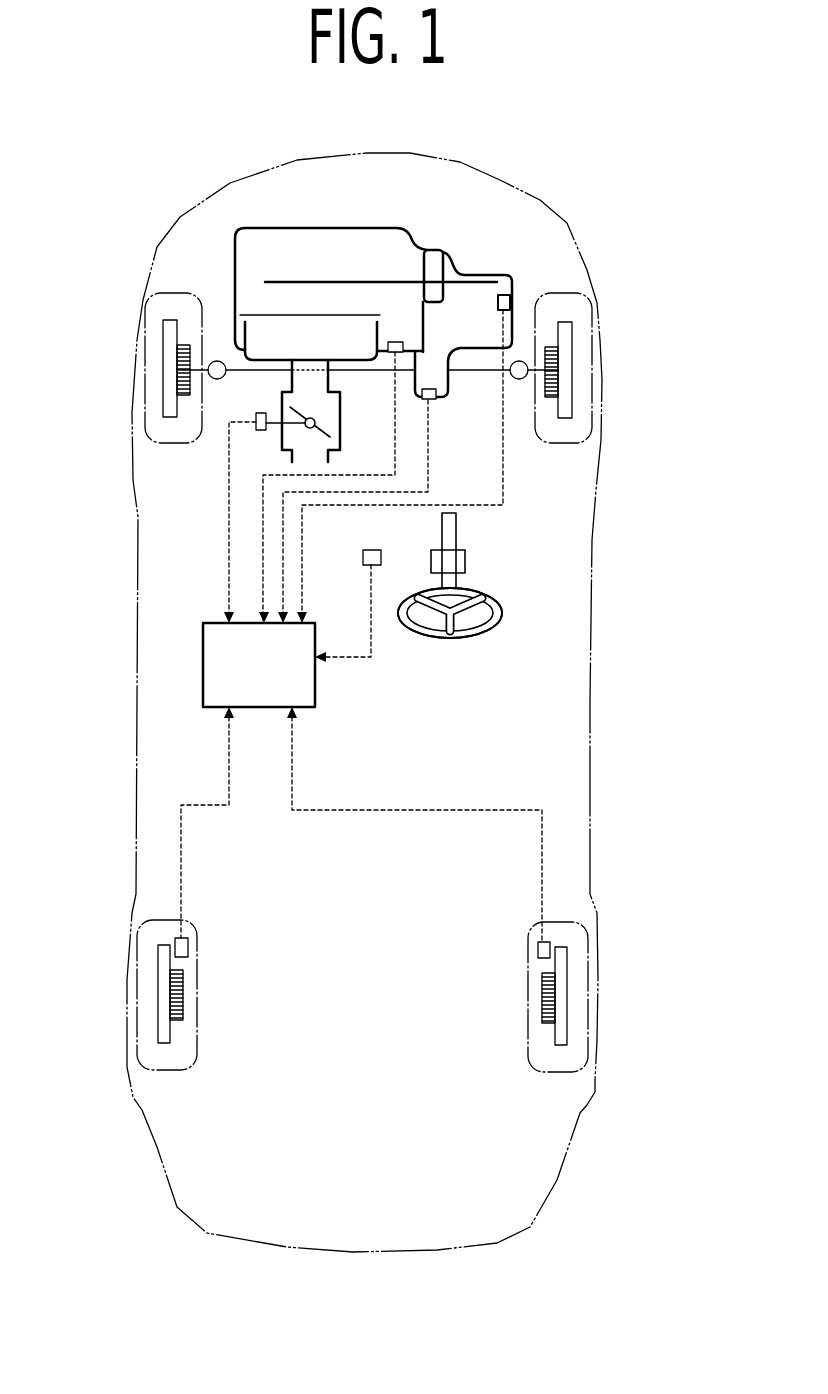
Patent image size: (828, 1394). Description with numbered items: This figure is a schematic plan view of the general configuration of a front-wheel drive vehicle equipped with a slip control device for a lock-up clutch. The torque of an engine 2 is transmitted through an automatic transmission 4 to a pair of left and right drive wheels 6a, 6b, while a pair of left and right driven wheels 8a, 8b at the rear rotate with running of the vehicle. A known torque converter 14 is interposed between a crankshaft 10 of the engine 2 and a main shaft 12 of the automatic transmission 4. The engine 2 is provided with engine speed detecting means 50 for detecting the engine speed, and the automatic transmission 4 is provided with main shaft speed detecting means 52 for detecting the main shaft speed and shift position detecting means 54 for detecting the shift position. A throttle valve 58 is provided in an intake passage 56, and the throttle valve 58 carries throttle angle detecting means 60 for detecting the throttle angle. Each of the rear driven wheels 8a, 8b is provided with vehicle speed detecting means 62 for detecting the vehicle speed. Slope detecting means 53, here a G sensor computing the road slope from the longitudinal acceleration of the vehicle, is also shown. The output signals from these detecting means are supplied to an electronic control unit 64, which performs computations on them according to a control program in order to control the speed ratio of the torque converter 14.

The engine 2 is at (343, 229).
The automatic transmission 4 is at (483, 288).
The left drive wheel 6a is at (167, 371).
The right drive wheel 6b is at (572, 370).
The left driven wheel 8a is at (165, 998).
The right driven wheel 8b is at (565, 993).
The crankshaft 10 is at (277, 281).
The main shaft 12 is at (468, 274).
The torque converter 14 is at (437, 263).
The engine speed detecting means 50 is at (394, 342).
The main shaft speed detecting means 52 is at (498, 305).
The slope detecting means 53 is at (363, 557).
The shift position detecting means 54 is at (428, 401).
The intake passage 56 is at (292, 460).
The throttle valve 58 is at (330, 436).
The throttle angle detecting means 60 is at (256, 414).
The vehicle speed detecting means 62 is at (188, 946).
The electronic control unit 64 is at (316, 699).